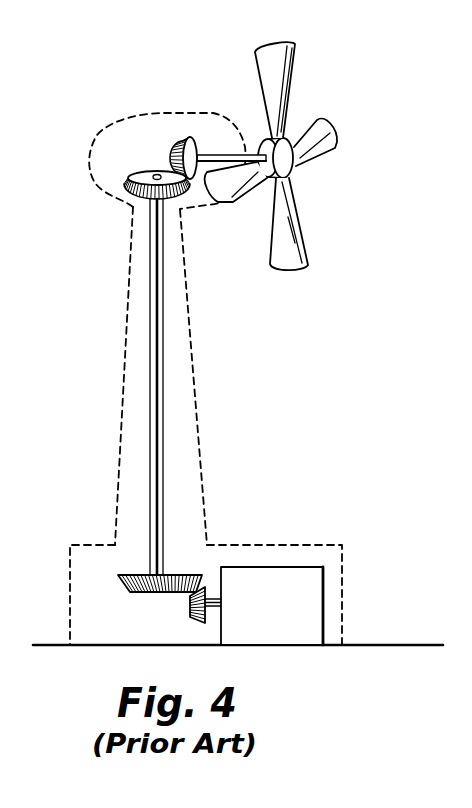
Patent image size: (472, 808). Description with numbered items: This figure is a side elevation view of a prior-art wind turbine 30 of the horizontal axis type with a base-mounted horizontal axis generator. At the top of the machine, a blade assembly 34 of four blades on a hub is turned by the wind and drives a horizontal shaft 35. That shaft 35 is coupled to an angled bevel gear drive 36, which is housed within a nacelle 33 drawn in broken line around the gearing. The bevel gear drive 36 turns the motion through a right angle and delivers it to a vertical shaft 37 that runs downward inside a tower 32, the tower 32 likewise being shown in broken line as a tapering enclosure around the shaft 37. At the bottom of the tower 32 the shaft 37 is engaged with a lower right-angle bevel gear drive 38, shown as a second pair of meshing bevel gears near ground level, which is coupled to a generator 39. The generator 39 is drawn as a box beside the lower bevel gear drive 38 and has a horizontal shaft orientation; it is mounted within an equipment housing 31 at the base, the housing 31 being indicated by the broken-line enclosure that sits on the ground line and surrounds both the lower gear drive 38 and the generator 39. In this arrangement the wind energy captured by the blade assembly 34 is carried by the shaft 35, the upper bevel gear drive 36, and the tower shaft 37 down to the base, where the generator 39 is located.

The wind turbine 30 is at (121, 76).
The equipment housing 31 is at (68, 595).
The tower 32 is at (193, 412).
The nacelle 33 is at (100, 190).
The blade assembly 34 is at (296, 98).
The shaft 35 is at (213, 153).
The bevel gear drive 36 is at (152, 157).
The shaft 37 is at (157, 328).
The lower bevel gear set 38 is at (157, 604).
The generator 39 is at (282, 588).